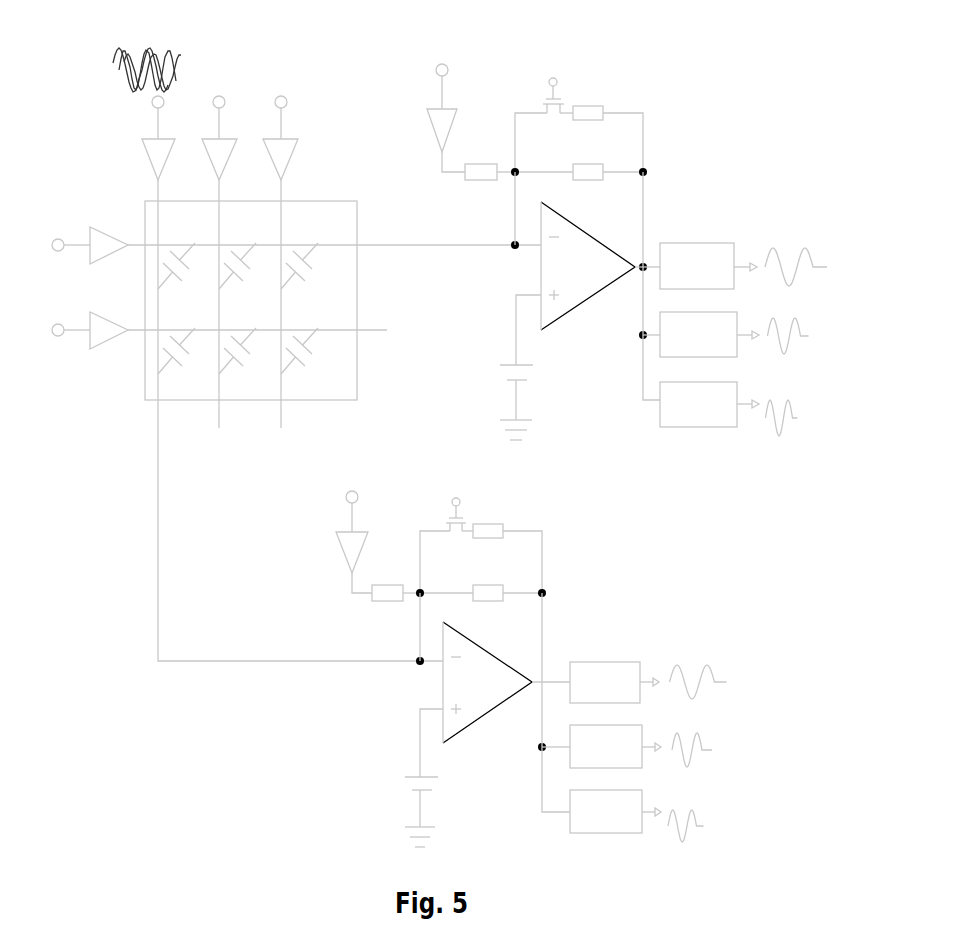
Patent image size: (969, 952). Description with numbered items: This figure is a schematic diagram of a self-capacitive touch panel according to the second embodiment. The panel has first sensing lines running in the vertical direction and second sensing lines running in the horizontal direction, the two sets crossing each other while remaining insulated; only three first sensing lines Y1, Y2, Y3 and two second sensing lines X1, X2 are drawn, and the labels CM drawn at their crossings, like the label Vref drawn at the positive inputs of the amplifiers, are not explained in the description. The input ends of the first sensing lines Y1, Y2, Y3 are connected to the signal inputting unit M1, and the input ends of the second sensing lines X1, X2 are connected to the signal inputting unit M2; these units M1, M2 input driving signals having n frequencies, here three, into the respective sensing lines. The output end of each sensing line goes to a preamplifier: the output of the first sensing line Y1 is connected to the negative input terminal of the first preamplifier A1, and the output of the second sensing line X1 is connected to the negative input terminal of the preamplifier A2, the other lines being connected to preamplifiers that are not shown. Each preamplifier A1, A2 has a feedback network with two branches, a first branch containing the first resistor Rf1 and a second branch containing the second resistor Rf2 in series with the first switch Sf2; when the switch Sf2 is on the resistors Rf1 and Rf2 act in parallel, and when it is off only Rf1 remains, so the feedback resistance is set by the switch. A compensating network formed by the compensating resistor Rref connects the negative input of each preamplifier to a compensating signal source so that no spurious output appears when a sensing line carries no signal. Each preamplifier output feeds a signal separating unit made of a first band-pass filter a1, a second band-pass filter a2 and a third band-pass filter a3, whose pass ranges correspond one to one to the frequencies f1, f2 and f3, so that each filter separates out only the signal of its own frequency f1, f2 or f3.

The signal inputting unit M1 is at (197, 97).
The signal inputting unit M2 is at (83, 270).
The second sensing line X1 is at (334, 231).
The second sensing line X2 is at (265, 310).
The first sensing line Y1 is at (274, 420).
The first sensing line Y2 is at (216, 324).
The first sensing line Y3 is at (286, 324).
The mutual capacitance CM is at (246, 321).
The compensating resistor Rref is at (425, 332).
The first resistor Rf1 is at (531, 373).
The second resistor Rf2 is at (531, 342).
The first switch Sf2 is at (505, 294).
The reference voltage source Vref is at (484, 571).
The first preamplifier A1 is at (600, 286).
The preamplifier A2 is at (506, 702).
The first band-pass filter a1 is at (663, 459).
The second band-pass filter a2 is at (664, 528).
The third band-pass filter a3 is at (664, 595).
The frequency f1 is at (749, 465).
The frequency f2 is at (740, 537).
The frequency f3 is at (733, 611).